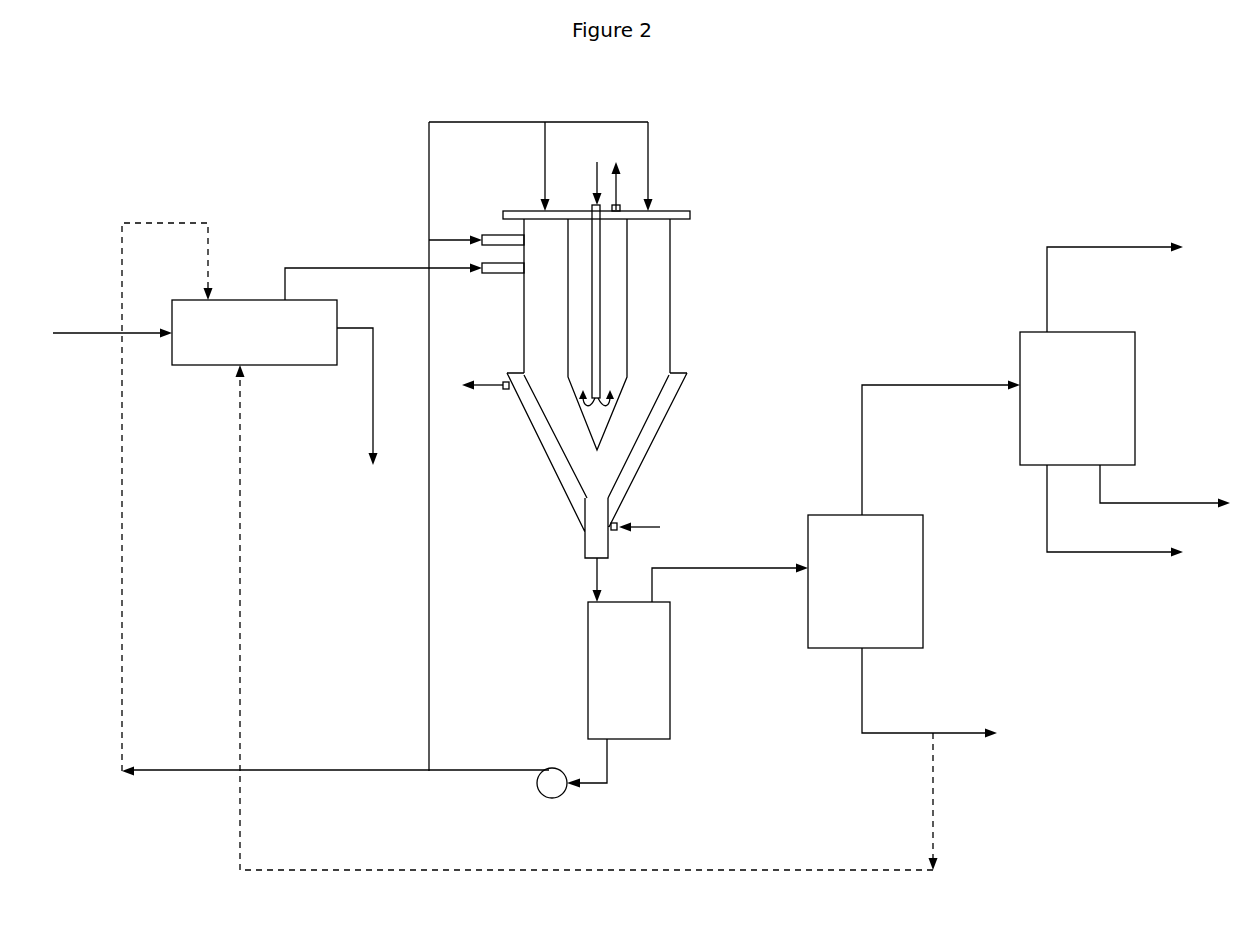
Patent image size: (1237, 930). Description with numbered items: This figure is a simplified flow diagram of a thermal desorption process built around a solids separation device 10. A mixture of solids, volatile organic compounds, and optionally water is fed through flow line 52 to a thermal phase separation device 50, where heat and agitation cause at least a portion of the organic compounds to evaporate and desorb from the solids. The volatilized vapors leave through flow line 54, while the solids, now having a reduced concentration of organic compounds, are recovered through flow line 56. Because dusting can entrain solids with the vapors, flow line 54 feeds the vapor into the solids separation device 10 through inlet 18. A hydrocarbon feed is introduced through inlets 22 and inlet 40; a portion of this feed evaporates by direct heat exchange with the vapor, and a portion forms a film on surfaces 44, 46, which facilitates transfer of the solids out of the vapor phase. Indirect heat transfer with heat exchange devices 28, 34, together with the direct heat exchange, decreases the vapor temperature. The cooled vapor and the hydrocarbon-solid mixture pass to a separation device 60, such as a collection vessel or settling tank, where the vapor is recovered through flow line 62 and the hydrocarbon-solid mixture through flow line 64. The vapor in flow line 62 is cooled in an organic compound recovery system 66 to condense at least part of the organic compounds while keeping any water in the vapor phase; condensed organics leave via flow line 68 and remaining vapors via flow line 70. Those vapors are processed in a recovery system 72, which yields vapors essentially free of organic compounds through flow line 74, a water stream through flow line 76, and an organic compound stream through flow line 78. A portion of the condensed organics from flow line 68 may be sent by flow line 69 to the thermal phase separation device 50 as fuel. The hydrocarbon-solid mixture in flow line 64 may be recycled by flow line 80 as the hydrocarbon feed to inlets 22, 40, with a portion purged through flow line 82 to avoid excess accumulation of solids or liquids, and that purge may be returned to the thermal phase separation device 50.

The solids separation device 10 is at (738, 246).
The inlet 18 is at (492, 275).
The inlets 22 is at (541, 211).
The heat exchange device 28 is at (600, 284).
The heat exchange device 34 is at (690, 396).
The inlet 40 is at (490, 235).
The surface 44 is at (634, 302).
The surface 46 is at (574, 451).
The thermal phase separation device 50 is at (254, 332).
The flow line 52 is at (75, 334).
The flow line 54 is at (300, 267).
The flow line 56 is at (373, 418).
The separation device 60 is at (629, 648).
The flow line 62 is at (735, 569).
The flow line 64 is at (600, 784).
The organic compound recovery system 66 is at (865, 581).
The flow line 68 is at (895, 734).
The flow line 69 is at (725, 871).
The flow line 70 is at (935, 386).
The recovery system 72 is at (1077, 398).
The flow line 74 is at (1135, 248).
The flow line 76 is at (1178, 503).
The flow line 78 is at (1105, 553).
The flow line 80 is at (429, 652).
The flow line 82 is at (350, 772).